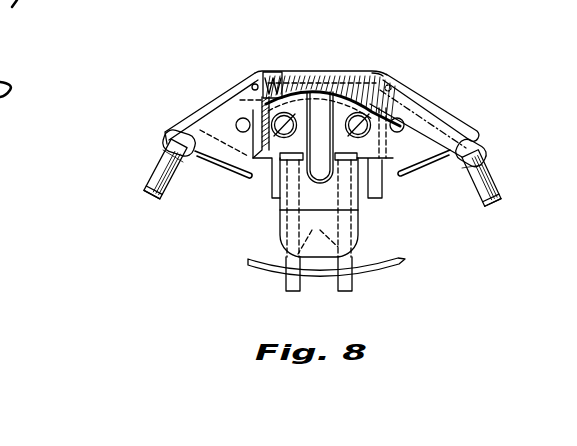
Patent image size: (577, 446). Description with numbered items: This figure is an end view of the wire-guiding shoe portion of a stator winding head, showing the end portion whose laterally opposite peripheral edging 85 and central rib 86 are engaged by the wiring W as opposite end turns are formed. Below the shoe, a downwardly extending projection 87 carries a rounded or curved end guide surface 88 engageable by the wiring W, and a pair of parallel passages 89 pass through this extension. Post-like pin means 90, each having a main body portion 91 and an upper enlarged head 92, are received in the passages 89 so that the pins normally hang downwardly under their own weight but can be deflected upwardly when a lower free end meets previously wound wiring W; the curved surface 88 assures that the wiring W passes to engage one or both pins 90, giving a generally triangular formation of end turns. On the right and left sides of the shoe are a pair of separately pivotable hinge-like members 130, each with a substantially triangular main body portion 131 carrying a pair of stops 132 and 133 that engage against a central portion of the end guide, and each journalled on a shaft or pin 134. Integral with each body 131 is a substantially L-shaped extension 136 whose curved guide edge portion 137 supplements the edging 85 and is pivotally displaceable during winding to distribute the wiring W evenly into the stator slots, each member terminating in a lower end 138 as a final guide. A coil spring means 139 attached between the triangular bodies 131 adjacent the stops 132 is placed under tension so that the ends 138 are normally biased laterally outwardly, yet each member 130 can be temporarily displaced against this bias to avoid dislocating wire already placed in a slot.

The peripheral edging 85 is at (282, 92).
The central rib 86 is at (320, 115).
The downwardly extending projection 87 is at (312, 197).
The curved end guide surface 88 is at (360, 235).
The parallel passages 89 is at (318, 233).
The post-like pin means 90 is at (343, 293).
The main body portion 91 is at (286, 278).
The upper enlarged head 92 is at (290, 158).
The hinge-like members 130 is at (208, 230).
The triangular main body portion 131 is at (212, 115).
The stop 132 is at (272, 86).
The stop 133 is at (251, 179).
The shaft or pin 134 is at (242, 119).
The L-shaped extension 136 is at (175, 145).
The curved guide edge portion 137 is at (160, 172).
The lower end 138 is at (145, 205).
The spring means 139 is at (317, 88).
The wiring W is at (404, 260).